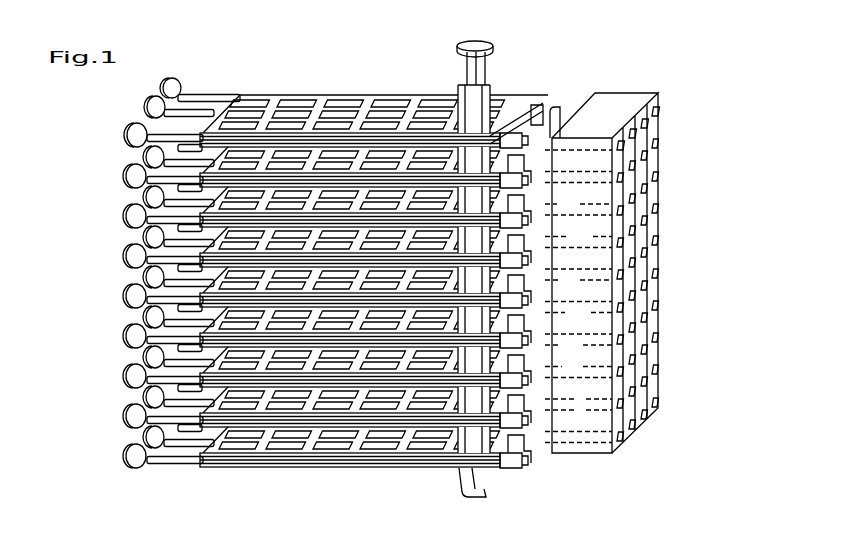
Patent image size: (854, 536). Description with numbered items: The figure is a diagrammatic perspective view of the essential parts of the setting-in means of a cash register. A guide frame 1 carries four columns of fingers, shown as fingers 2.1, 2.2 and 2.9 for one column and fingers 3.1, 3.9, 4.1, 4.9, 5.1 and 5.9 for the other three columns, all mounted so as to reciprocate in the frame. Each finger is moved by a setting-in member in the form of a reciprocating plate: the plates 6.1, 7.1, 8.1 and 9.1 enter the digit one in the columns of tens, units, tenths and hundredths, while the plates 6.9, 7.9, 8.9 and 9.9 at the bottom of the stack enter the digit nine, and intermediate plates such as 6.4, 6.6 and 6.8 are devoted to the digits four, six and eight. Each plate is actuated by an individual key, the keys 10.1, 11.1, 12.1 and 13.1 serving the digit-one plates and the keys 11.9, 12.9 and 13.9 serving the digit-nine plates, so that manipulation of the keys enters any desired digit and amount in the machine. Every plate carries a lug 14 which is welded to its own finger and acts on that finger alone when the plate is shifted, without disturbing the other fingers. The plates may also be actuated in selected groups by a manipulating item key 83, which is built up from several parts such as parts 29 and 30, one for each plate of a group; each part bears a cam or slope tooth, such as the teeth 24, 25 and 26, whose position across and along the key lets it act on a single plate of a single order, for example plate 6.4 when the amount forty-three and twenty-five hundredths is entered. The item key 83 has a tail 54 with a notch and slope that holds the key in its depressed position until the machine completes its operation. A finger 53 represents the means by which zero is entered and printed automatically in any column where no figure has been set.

The guide frame 1 is at (630, 296).
The finger 2.1 is at (656, 120).
The finger 2.2 is at (658, 174).
The finger 2.9 is at (655, 408).
The finger 3.1 is at (643, 154).
The finger 3.9 is at (643, 421).
The finger 4.1 is at (631, 167).
The finger 4.9 is at (630, 431).
The finger 5.1 is at (622, 177).
The finger 5.9 is at (618, 443).
The reciprocating plate 6.1 is at (374, 102).
The reciprocating plate 6.4 is at (545, 233).
The reciprocating plate 6.6 is at (546, 314).
The reciprocating plate 6.8 is at (208, 405).
The reciprocating plate 6.9 is at (350, 471).
The reciprocating plate 7.1 is at (395, 136).
The reciprocating plate 7.9 is at (327, 461).
The reciprocating plate 8.1 is at (302, 140).
The reciprocating plate 8.9 is at (285, 458).
The reciprocating plate 9.1 is at (256, 140).
The reciprocating plate 9.9 is at (250, 460).
The key 10.1 is at (182, 82).
The key 11.1 is at (226, 97).
The key 11.9 is at (203, 426).
The key 12.1 is at (204, 112).
The key 12.9 is at (178, 444).
The key 13.1 is at (165, 137).
The key 13.9 is at (157, 460).
The lug 14 is at (550, 130).
The cam tooth 24 is at (578, 205).
The cam tooth 25 is at (578, 368).
The cam tooth 26 is at (578, 285).
The key part 29 is at (578, 342).
The key part 30 is at (498, 134).
The finger 53 is at (659, 110).
The tail 54 is at (484, 492).
The manipulating item key 83 is at (494, 275).